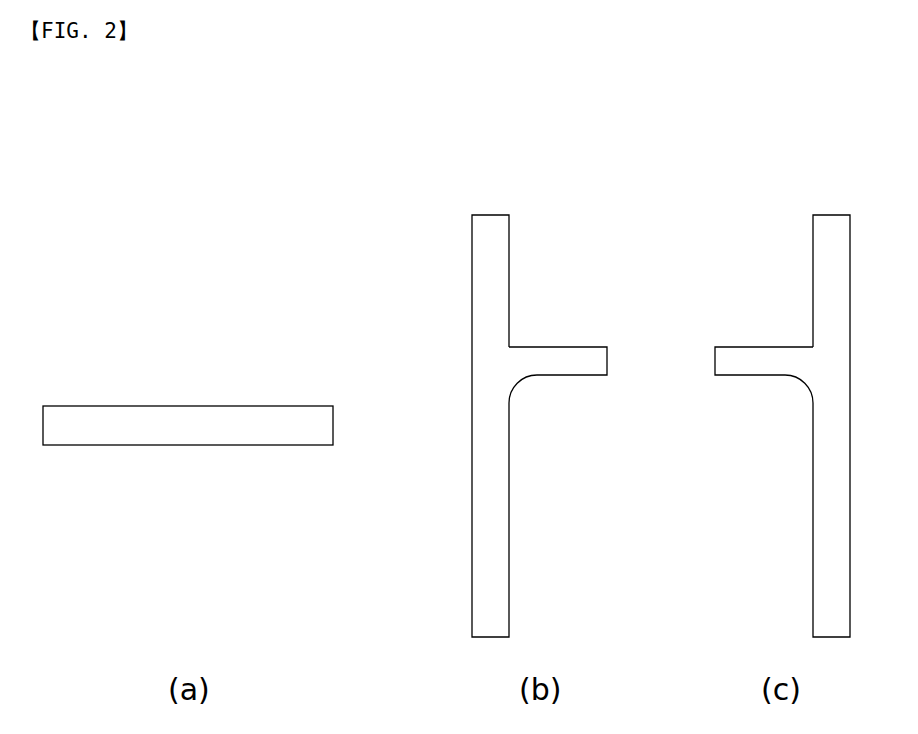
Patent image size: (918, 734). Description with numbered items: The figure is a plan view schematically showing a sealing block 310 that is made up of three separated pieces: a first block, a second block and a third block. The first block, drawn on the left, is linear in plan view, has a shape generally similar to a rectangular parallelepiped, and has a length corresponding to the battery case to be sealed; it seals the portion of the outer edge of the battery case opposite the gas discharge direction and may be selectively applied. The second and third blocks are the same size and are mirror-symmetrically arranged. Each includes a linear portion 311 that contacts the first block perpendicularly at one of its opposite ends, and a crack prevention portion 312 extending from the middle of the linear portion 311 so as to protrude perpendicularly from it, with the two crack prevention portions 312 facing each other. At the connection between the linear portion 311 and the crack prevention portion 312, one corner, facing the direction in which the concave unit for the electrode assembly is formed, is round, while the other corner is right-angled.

The sealing block 310 is at (122, 137).
The linear portion 311 is at (808, 245).
The crack prevention portion 312 is at (750, 346).